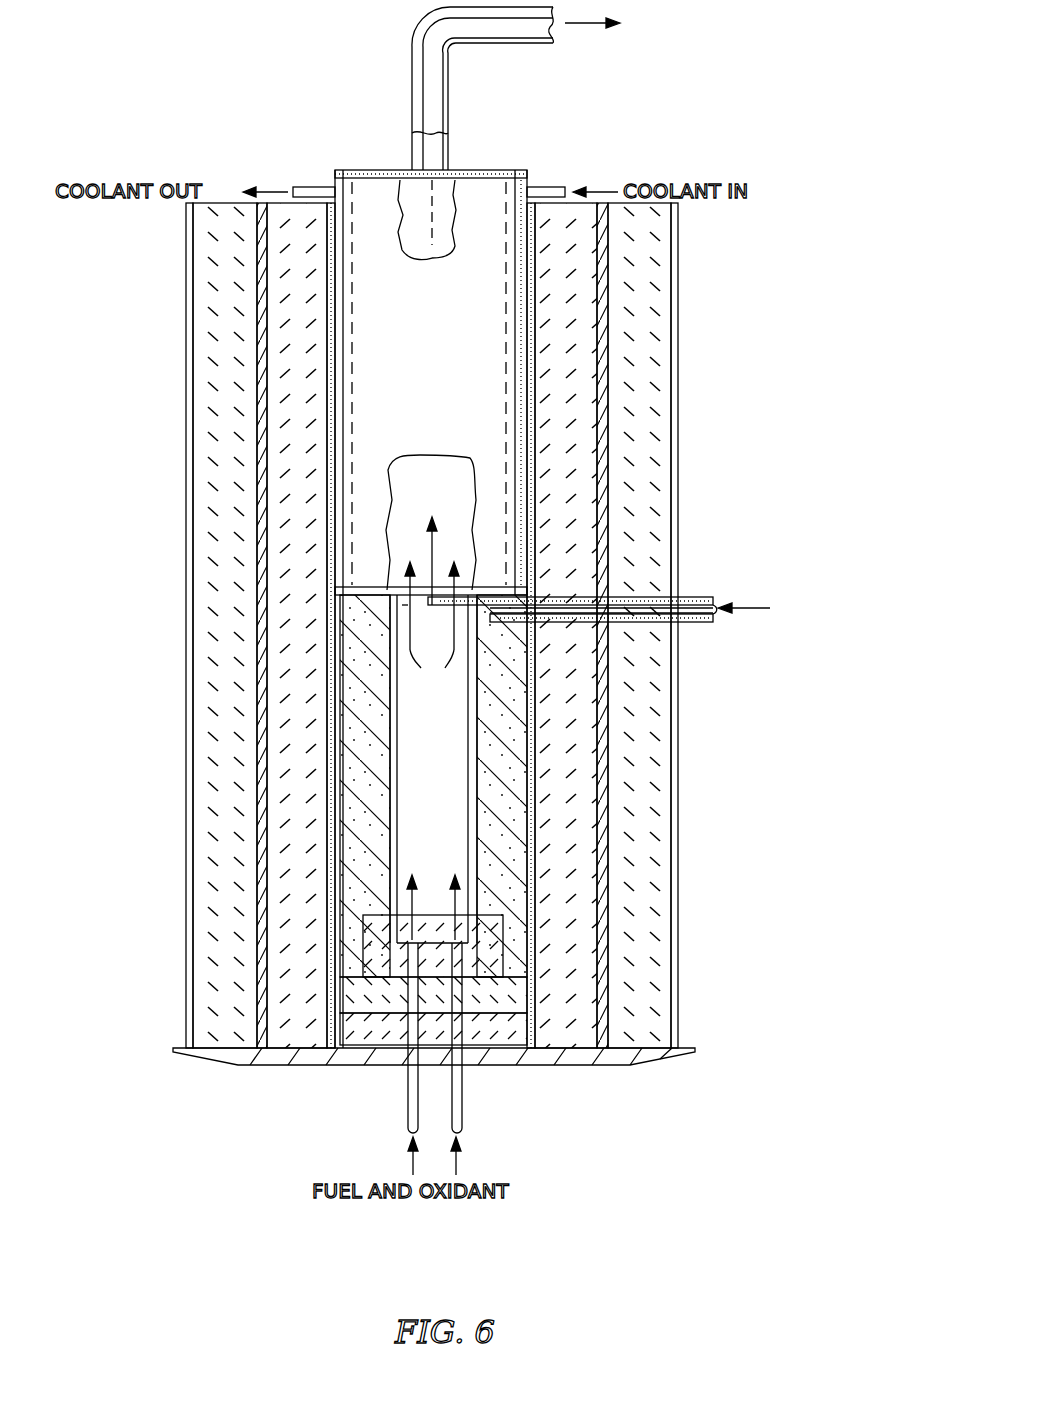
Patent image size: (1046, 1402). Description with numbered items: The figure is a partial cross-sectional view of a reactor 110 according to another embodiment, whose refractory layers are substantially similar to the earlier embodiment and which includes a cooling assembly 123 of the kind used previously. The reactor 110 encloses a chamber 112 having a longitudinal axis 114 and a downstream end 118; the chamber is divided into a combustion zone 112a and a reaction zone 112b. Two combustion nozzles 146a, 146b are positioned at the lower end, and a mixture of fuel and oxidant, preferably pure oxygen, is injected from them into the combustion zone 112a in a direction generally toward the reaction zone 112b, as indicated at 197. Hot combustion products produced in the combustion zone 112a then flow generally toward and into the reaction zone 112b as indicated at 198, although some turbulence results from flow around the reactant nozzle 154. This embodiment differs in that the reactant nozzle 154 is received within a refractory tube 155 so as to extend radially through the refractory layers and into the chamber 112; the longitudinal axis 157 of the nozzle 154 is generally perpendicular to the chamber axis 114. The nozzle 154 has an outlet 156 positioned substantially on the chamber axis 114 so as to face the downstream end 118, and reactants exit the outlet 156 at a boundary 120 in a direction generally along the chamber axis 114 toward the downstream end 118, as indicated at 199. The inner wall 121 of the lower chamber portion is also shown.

The reactor 110 is at (712, 352).
The chamber 112 is at (450, 178).
The combustion zone 112a is at (455, 791).
The reaction zone 112b is at (453, 485).
The longitudinal axis of chamber 114 is at (428, 218).
The downstream end of chamber 118 is at (440, 178).
The boundary 120 is at (418, 605).
The inner tube wall 121 is at (400, 706).
The cooling assembly 123 is at (378, 325).
The combustion nozzle 146a is at (408, 1110).
The combustion nozzle 146b is at (463, 1102).
The reactant nozzle 154 is at (700, 596).
The refractory tube 155 is at (705, 622).
The outlet of reactant nozzle 156 is at (442, 605).
The longitudinal axis of nozzle 157 is at (684, 622).
The fuel and oxidant injection direction 197 is at (453, 894).
The combustion product flow direction 198 is at (428, 645).
The reactant exit direction 199 is at (440, 542).